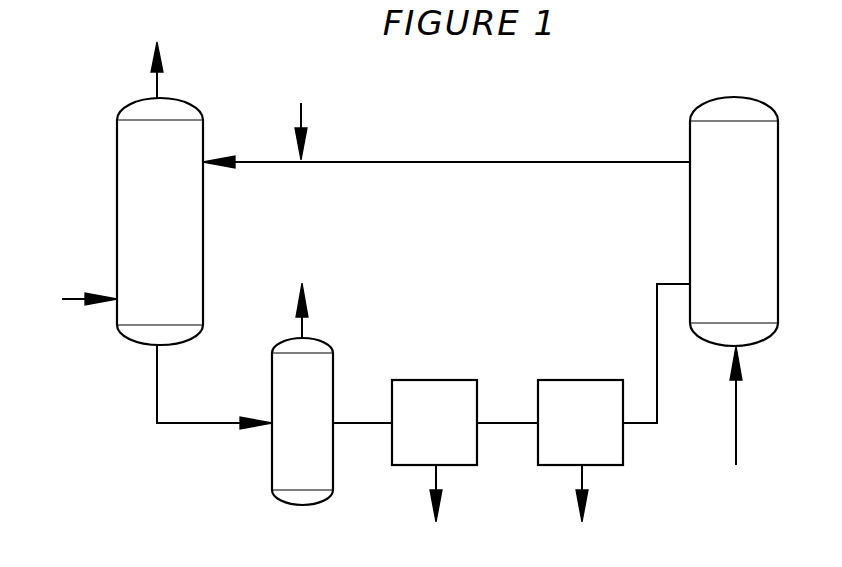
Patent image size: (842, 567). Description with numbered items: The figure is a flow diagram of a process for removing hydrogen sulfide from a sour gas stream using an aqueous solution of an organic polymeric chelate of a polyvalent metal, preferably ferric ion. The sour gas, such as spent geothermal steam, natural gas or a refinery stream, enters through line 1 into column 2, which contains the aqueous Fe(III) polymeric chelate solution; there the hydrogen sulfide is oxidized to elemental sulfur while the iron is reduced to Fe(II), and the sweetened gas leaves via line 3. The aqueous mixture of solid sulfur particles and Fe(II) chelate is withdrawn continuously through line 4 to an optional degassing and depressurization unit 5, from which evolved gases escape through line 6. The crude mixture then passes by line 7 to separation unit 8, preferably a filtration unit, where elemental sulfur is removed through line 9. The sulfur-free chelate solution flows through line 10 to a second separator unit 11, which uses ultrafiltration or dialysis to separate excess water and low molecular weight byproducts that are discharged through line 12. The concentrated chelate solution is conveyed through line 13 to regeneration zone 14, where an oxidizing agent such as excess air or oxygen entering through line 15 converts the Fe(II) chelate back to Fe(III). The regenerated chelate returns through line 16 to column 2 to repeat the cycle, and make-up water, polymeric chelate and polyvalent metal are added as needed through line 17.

The line 1 is at (80, 295).
The column 2 is at (203, 222).
The line 3 is at (160, 80).
The line 4 is at (217, 428).
The degassing and depressurization unit 5 is at (333, 385).
The line 6 is at (305, 330).
The line 7 is at (374, 428).
The separation unit 8 is at (438, 378).
The line 9 is at (435, 513).
The line 10 is at (503, 421).
The second separator unit 11 is at (597, 378).
The line 12 is at (585, 513).
The line 13 is at (659, 375).
The regeneration zone 14 is at (690, 208).
The line 15 is at (738, 412).
The line 16 is at (507, 160).
The line 17 is at (303, 118).